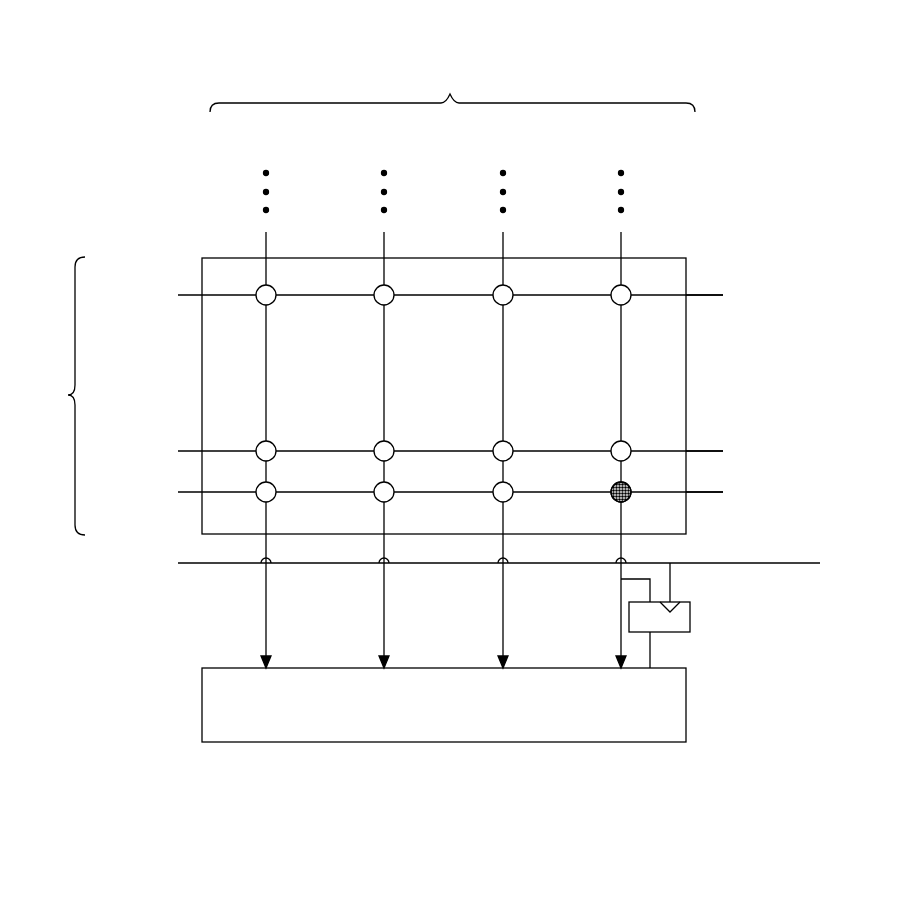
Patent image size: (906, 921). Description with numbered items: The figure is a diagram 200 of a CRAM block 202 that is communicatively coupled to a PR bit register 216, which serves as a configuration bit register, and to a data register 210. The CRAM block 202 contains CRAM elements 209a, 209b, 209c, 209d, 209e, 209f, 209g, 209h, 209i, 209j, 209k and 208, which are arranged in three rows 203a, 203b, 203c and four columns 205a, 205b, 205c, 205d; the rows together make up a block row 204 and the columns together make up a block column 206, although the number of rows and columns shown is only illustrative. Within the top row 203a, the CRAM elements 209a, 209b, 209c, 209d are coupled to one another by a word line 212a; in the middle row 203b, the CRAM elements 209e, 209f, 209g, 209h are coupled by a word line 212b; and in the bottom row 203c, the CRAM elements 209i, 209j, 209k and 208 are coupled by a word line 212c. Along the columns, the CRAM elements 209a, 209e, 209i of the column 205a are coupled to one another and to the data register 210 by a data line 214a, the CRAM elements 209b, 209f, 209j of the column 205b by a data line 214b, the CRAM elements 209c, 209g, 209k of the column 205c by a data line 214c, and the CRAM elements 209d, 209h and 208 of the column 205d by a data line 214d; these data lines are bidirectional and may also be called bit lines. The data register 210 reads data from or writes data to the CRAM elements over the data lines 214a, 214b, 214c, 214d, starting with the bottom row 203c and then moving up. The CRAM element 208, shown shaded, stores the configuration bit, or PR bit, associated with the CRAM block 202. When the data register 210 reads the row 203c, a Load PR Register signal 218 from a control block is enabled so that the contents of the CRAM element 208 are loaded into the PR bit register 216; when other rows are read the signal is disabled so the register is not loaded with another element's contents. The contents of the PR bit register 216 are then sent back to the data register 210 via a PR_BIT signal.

The diagram 200 is at (133, 36).
The CRAM block 202 is at (686, 258).
The row 203a is at (178, 275).
The row 203b is at (178, 431).
The row 203c is at (178, 472).
The block row 204 is at (53, 396).
The column 205a is at (285, 162).
The column 205b is at (403, 162).
The column 205c is at (522, 162).
The column 205d is at (640, 162).
The block column 206 is at (452, 90).
The CRAM element 208 is at (612, 497).
The CRAM element 209a is at (272, 303).
The CRAM element 209b is at (390, 303).
The CRAM element 209c is at (509, 303).
The CRAM element 209d is at (627, 303).
The CRAM element 209e is at (272, 444).
The CRAM element 209f is at (390, 444).
The CRAM element 209g is at (509, 444).
The CRAM element 209h is at (627, 443).
The CRAM element 209i is at (272, 485).
The CRAM element 209j is at (390, 485).
The CRAM element 209k is at (509, 485).
The data register 210 is at (687, 703).
The word line 212a is at (705, 295).
The word line 212b is at (705, 451).
The word line 212c is at (705, 492).
The data line 214a is at (266, 607).
The data line 214b is at (384, 607).
The data line 214c is at (503, 607).
The data line 214d is at (621, 607).
The PR bit register 216 is at (690, 617).
The Load PR Register signal 218 is at (795, 564).